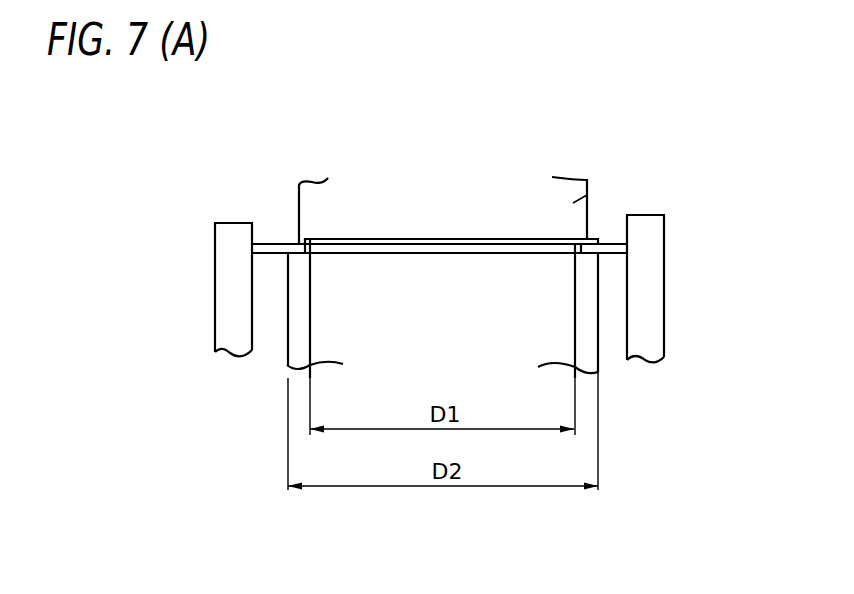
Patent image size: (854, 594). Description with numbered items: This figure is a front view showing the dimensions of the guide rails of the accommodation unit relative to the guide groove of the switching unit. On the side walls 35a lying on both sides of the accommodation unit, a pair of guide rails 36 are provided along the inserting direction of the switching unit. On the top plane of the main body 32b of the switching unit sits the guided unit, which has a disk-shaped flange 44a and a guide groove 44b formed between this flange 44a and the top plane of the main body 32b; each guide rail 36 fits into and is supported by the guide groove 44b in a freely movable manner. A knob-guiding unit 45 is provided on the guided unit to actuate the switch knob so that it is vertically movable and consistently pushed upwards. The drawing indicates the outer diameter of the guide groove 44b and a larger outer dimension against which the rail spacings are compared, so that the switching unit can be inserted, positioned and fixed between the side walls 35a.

The main body of the switching unit 32b is at (287, 348).
The side wall 35a is at (253, 282).
The guide rail 36 is at (270, 243).
The flange 44a is at (291, 243).
The guide groove 44b is at (306, 243).
The knob-guiding unit 45 is at (590, 197).